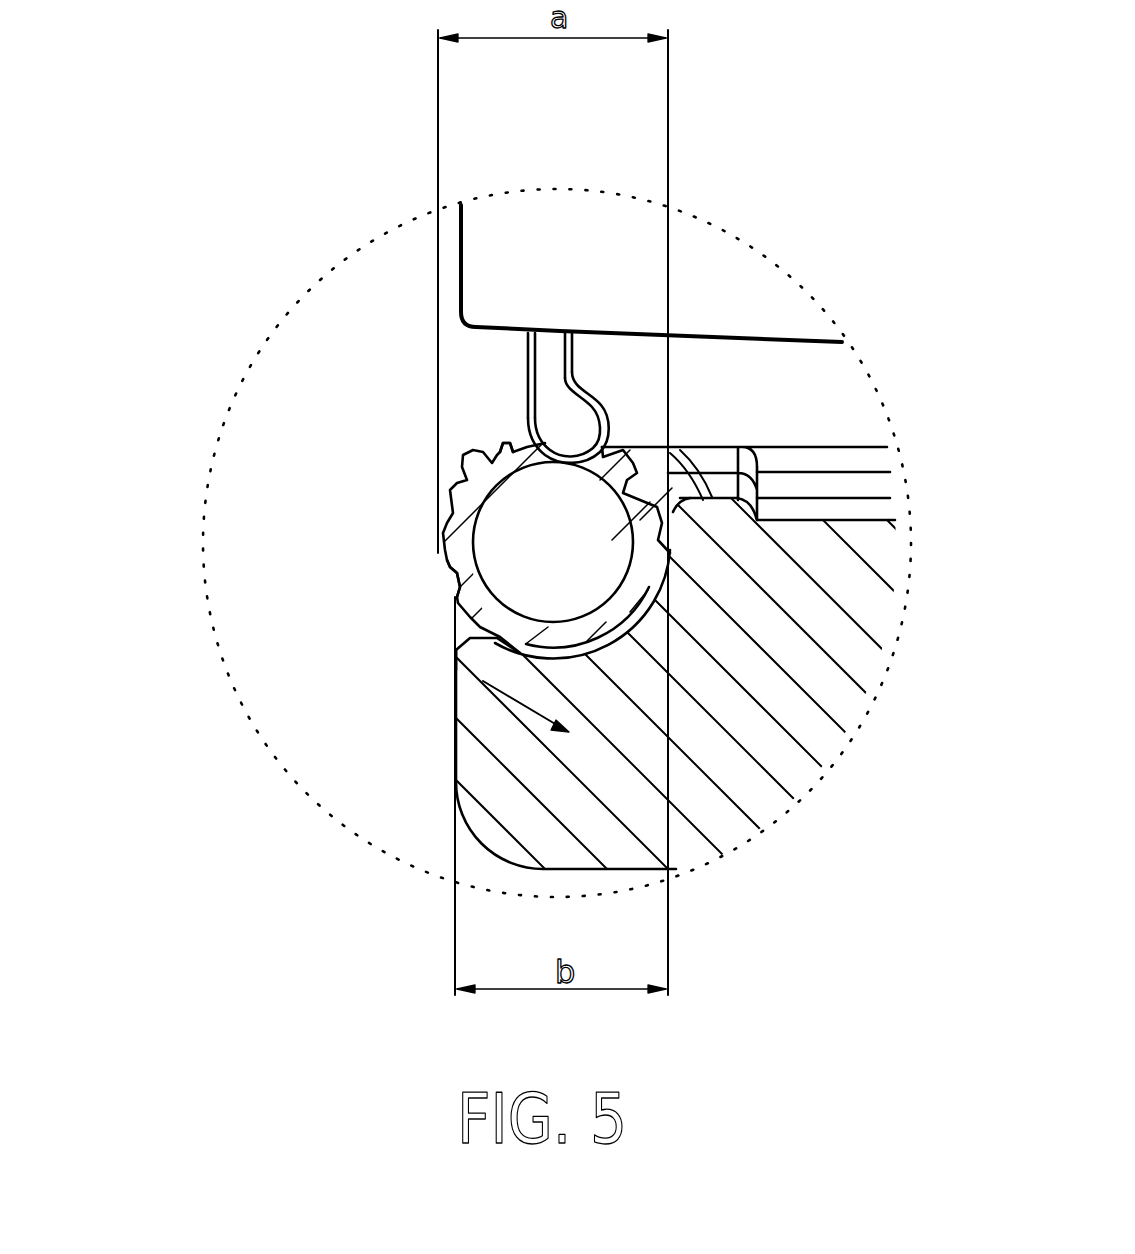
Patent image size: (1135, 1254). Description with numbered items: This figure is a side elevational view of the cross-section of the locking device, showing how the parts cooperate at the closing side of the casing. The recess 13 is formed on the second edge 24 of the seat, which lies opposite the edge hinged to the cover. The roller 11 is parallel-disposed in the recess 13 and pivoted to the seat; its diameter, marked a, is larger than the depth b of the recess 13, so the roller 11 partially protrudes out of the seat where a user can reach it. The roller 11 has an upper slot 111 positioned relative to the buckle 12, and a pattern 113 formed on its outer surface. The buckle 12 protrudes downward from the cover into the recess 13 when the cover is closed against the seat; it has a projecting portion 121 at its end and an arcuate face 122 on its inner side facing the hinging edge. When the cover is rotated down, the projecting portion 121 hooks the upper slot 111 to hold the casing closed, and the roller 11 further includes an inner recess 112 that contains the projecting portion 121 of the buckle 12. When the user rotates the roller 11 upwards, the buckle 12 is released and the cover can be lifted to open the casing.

The roller 11 is at (474, 506).
The upper slot 111 is at (490, 447).
The inner recess 112 is at (456, 669).
The pattern 113 is at (445, 566).
The buckle 12 is at (530, 382).
The projecting portion 121 is at (593, 413).
The arcuate face 122 is at (570, 373).
The recess 13 is at (470, 630).
The second edge 24 is at (456, 735).